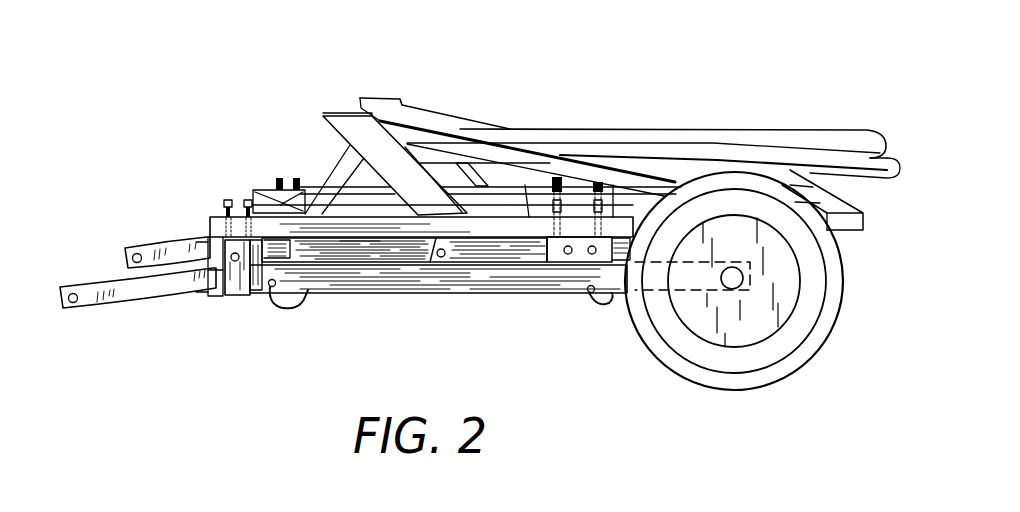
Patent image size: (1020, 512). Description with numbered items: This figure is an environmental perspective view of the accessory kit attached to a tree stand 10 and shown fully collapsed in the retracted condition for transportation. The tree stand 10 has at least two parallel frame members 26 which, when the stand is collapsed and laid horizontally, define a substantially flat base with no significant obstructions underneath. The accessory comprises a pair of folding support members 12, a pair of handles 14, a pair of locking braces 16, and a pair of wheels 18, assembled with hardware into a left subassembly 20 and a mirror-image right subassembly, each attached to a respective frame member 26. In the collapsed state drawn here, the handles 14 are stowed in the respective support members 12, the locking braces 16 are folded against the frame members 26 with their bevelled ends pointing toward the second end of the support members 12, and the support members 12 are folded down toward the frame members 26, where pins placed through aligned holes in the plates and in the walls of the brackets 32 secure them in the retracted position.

The tree stand 10 is at (582, 96).
The folding support members 12 is at (493, 283).
The handles 14 is at (127, 247).
The locking braces 16 is at (462, 250).
The wheels 18 is at (802, 374).
The left subassembly 20 is at (241, 316).
The frame members 26 is at (352, 228).
The brackets 32 is at (573, 258).